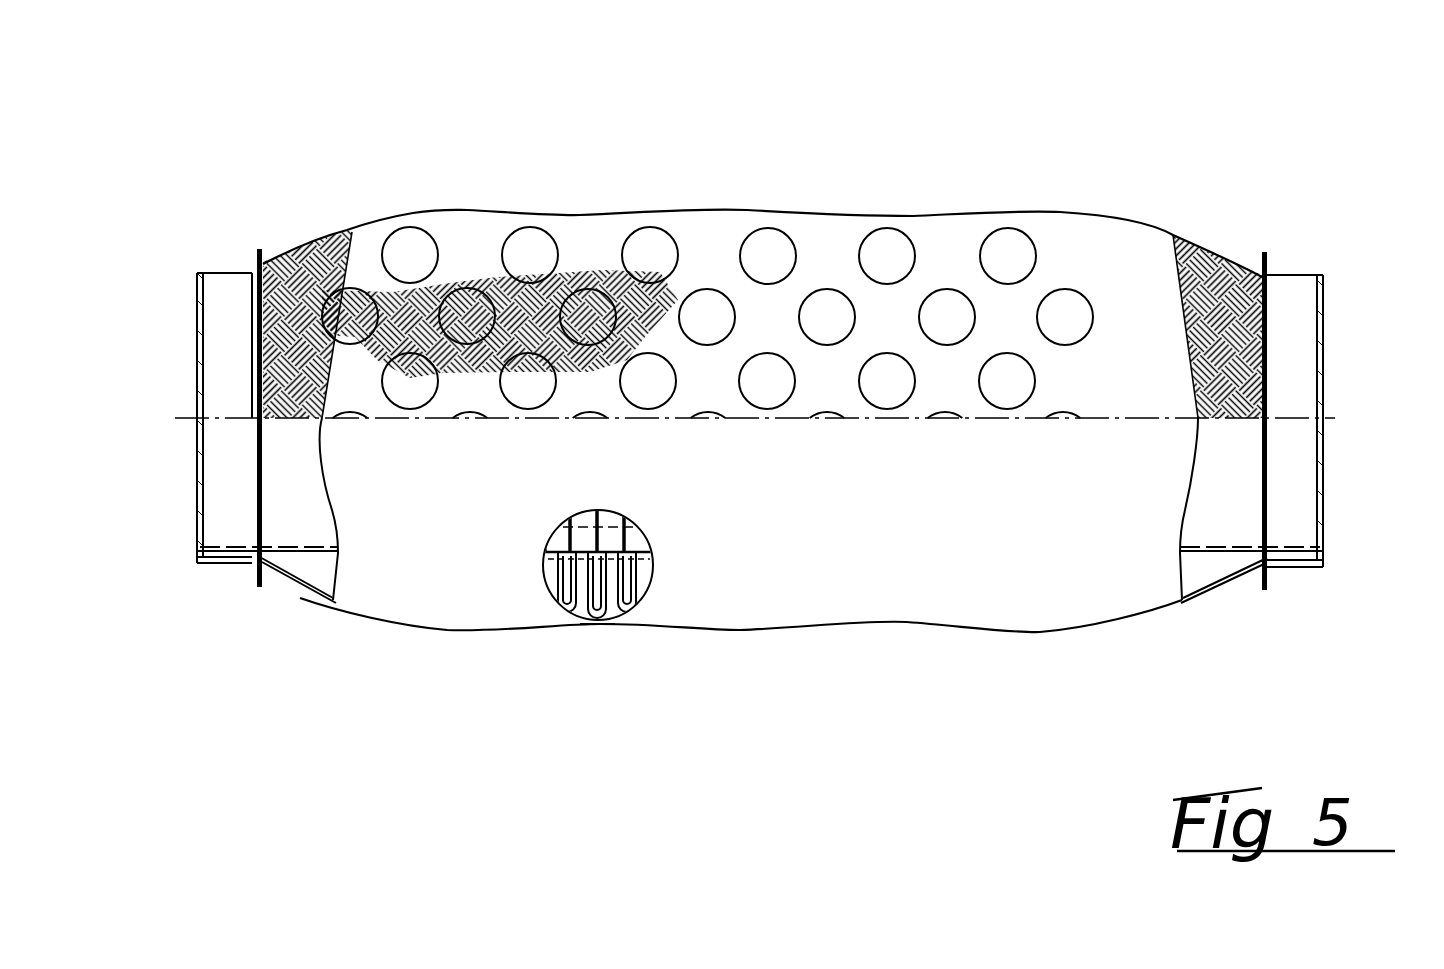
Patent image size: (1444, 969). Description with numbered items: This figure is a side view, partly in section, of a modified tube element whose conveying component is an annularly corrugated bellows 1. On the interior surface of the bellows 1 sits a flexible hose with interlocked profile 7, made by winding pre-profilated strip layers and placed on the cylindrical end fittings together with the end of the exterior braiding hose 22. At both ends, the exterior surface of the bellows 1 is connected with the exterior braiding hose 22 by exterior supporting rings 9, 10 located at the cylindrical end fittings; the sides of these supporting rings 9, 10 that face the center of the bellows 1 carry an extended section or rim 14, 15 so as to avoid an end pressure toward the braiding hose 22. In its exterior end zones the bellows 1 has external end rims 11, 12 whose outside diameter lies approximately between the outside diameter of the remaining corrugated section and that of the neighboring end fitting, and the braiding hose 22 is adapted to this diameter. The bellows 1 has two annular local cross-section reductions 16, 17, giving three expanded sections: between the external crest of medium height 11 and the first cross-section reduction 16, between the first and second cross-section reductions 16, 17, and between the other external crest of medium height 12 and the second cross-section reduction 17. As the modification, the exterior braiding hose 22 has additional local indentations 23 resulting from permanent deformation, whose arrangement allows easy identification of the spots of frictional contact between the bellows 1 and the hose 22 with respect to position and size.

The bellows 1 is at (608, 593).
The flexible hose with interlocked profile 7 is at (560, 537).
The exterior supporting ring 9 is at (223, 468).
The exterior supporting ring 10 is at (1283, 498).
The external end rim 11 is at (320, 580).
The external end rim 12 is at (1197, 580).
The rim 14 is at (258, 255).
The rim 15 is at (1270, 243).
The first annular cross-section reduction 16 is at (596, 627).
The second annular cross-section reduction 17 is at (930, 205).
The exterior braiding hose 22 is at (898, 562).
The local indentations 23 is at (652, 250).